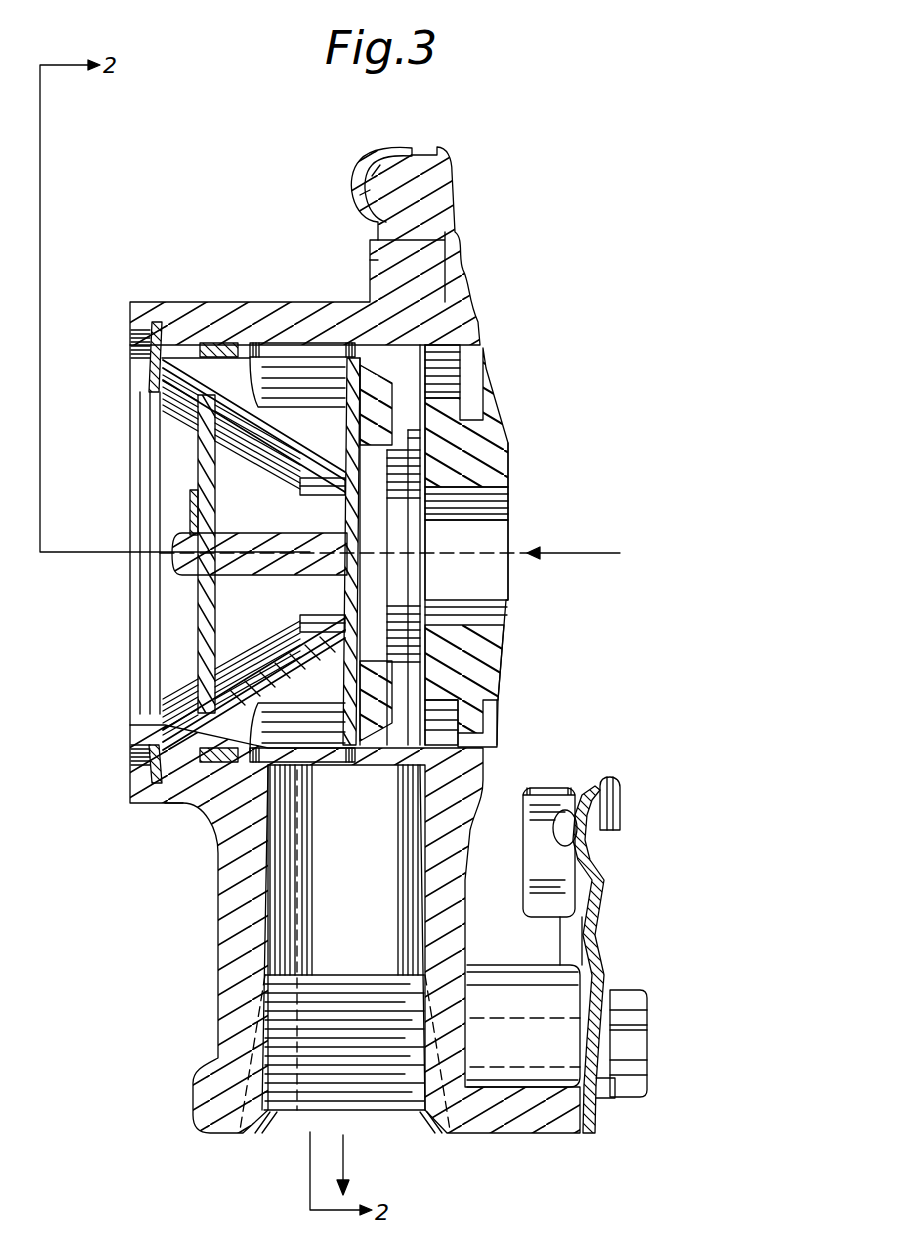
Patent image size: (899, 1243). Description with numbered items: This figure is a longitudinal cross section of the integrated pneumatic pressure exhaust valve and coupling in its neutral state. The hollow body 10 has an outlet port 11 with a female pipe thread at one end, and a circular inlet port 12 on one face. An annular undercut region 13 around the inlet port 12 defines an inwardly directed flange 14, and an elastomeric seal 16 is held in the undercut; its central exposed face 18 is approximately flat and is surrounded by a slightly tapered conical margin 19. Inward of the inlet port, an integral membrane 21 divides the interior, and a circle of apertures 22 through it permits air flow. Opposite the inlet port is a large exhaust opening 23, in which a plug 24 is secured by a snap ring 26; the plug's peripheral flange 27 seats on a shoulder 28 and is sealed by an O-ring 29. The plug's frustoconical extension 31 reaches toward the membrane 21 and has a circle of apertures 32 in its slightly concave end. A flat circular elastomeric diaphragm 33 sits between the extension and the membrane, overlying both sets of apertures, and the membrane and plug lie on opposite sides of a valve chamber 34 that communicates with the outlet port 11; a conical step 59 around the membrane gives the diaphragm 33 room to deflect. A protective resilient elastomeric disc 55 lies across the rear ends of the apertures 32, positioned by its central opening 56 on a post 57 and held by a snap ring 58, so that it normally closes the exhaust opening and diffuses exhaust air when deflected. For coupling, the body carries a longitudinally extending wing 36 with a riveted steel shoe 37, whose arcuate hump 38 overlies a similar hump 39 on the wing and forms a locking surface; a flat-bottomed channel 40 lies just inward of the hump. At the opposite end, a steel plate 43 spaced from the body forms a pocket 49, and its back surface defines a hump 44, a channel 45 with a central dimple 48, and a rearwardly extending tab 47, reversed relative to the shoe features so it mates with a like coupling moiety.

The hollow body 10 is at (176, 292).
The outlet port 11 is at (272, 1122).
The inlet port 12 is at (488, 547).
The annular undercut region 13 is at (457, 347).
The inwardly directed flange 14 is at (470, 722).
The elastomeric seal 16 is at (498, 396).
The central exposed face 18 is at (506, 476).
The conical margin 19 is at (508, 682).
The membrane 21 is at (413, 666).
The apertures 22 is at (400, 503).
The exhaust opening 23 is at (160, 365).
The plug 24 is at (232, 684).
The snap ring 26 is at (130, 762).
The peripheral flange 27 is at (175, 805).
The shoulder 28 is at (243, 343).
The O-ring 29 is at (262, 343).
The frustoconical extension 31 is at (205, 732).
The apertures 32 is at (312, 492).
The elastomeric diaphragm 33 is at (430, 530).
The valve chamber 34 is at (240, 765).
The wing 36 is at (433, 183).
The steel shoe 37 is at (392, 136).
The arcuate hump 38 is at (353, 187).
The arcuate hump 39 is at (358, 170).
The channel 40 is at (370, 262).
The steel plate 43 is at (585, 940).
The hump 44 is at (577, 828).
The channel 45 is at (606, 982).
The tab 47 is at (523, 812).
The dimple 48 is at (600, 953).
The pocket 49 is at (505, 884).
The protective resilient elastomeric disc 55 is at (200, 430).
The central opening 56 is at (222, 540).
The post 57 is at (170, 548).
The snap ring 58 is at (192, 510).
The conical step 59 is at (380, 730).